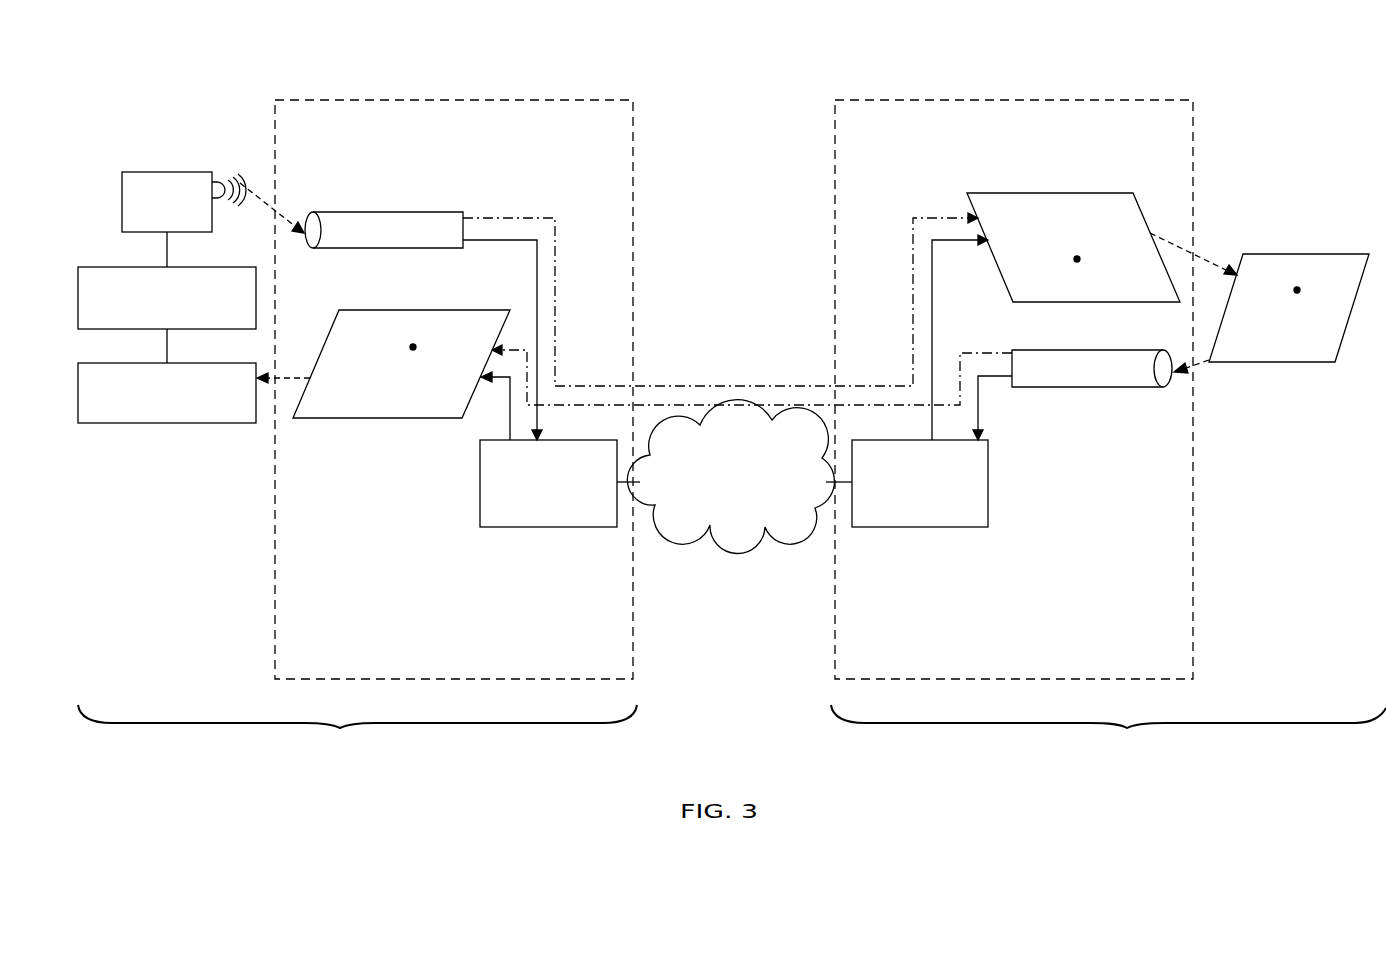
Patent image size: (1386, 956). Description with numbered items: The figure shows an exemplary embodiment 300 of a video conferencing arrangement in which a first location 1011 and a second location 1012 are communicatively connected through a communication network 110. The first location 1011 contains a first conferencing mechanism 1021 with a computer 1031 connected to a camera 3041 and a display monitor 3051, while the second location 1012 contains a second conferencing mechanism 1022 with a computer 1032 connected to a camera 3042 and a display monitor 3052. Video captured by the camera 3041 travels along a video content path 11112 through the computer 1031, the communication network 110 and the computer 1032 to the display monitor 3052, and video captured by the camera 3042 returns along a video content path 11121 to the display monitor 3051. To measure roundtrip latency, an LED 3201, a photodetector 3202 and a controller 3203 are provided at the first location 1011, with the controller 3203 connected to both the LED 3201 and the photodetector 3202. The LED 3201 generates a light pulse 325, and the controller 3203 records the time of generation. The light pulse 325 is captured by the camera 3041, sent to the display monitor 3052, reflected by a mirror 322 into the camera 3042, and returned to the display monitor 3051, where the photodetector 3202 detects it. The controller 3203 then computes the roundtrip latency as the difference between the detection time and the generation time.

The exemplary embodiment 300 is at (1340, 106).
The first location 1011 is at (357, 734).
The second location 1012 is at (1108, 734).
The first conferencing mechanism 1021 is at (458, 666).
The second conferencing mechanism 1022 is at (1018, 666).
The computer 1031 is at (565, 509).
The computer 1032 is at (937, 509).
The communication network 110 is at (747, 517).
The video content path 11112 is at (696, 384).
The video content path 11121 is at (797, 405).
The camera 3041 is at (383, 212).
The camera 3042 is at (1095, 387).
The display monitor 3051 is at (376, 418).
The display monitor 3052 is at (1055, 193).
The LED 3201 is at (181, 227).
The photodetector 3202 is at (181, 415).
The controller 3203 is at (181, 322).
The mirror 322 is at (1281, 362).
The light pulse 325 is at (413, 345).